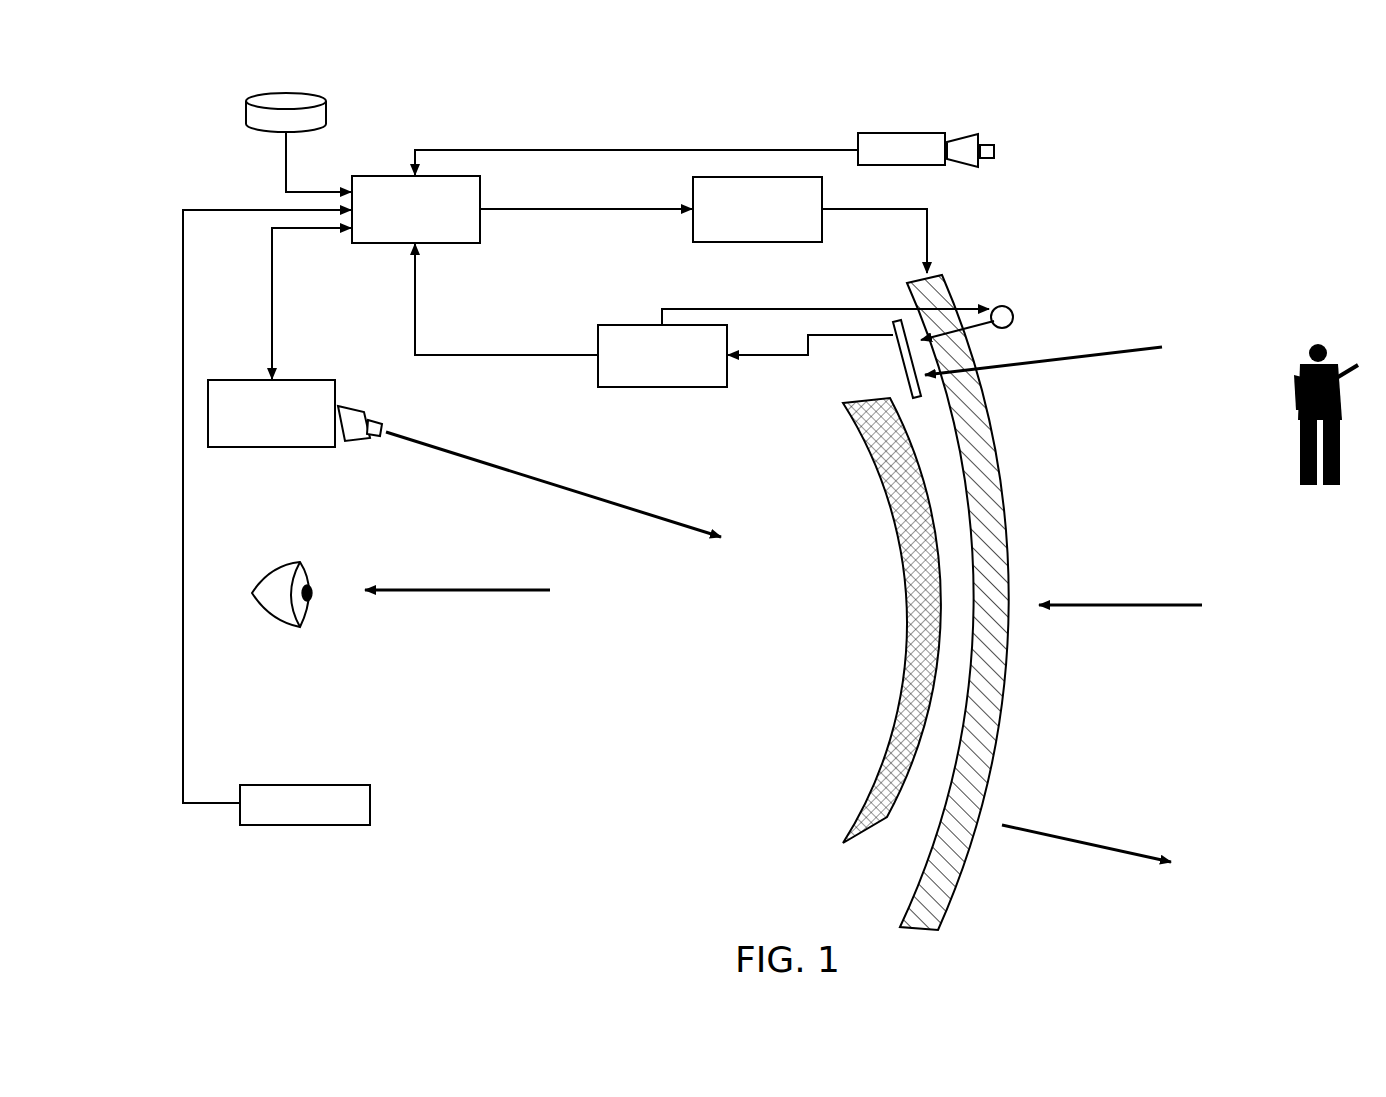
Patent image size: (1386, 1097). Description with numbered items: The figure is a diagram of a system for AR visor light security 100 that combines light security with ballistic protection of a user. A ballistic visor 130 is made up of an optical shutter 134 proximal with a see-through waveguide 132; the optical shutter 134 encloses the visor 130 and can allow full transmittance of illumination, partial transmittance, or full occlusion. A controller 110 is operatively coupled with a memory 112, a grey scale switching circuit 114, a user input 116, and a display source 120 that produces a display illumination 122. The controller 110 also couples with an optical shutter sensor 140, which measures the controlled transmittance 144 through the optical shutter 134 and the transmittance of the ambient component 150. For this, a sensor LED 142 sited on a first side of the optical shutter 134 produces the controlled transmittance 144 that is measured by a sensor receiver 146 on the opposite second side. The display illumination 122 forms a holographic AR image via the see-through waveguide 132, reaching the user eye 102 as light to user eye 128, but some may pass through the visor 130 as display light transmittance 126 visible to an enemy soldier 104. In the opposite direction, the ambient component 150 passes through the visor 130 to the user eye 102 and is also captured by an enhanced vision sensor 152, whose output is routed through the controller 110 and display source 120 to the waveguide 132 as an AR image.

The system for AR visor light security 100 is at (146, 132).
The user eye 102 is at (263, 566).
The enemy soldier 104 is at (1337, 488).
The controller 110 is at (462, 246).
The memory 112 is at (268, 137).
The grey scale switching circuit 114 is at (783, 246).
The user input 116 is at (302, 826).
The display source 120 is at (308, 452).
The display illumination 122 is at (438, 446).
The display light transmittance 126 is at (1132, 858).
The light to user eye 128 is at (500, 597).
The ballistic visor 130 is at (877, 668).
The see-through waveguide 132 is at (858, 815).
The optical shutter 134 is at (913, 898).
The optical shutter sensor 140 is at (668, 391).
The sensor LED 142 is at (1003, 305).
The controlled transmittance 144 is at (977, 328).
The sensor receiver 146 is at (890, 348).
The ambient component 150 is at (1128, 347).
The enhanced vision sensor 152 is at (907, 128).